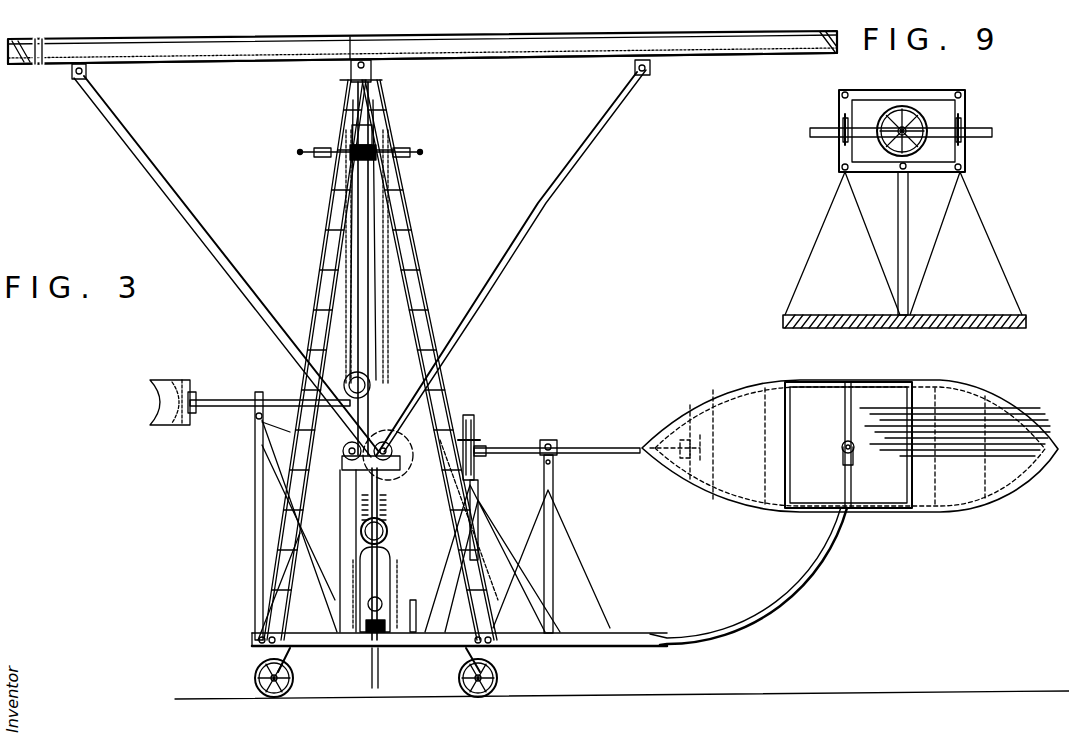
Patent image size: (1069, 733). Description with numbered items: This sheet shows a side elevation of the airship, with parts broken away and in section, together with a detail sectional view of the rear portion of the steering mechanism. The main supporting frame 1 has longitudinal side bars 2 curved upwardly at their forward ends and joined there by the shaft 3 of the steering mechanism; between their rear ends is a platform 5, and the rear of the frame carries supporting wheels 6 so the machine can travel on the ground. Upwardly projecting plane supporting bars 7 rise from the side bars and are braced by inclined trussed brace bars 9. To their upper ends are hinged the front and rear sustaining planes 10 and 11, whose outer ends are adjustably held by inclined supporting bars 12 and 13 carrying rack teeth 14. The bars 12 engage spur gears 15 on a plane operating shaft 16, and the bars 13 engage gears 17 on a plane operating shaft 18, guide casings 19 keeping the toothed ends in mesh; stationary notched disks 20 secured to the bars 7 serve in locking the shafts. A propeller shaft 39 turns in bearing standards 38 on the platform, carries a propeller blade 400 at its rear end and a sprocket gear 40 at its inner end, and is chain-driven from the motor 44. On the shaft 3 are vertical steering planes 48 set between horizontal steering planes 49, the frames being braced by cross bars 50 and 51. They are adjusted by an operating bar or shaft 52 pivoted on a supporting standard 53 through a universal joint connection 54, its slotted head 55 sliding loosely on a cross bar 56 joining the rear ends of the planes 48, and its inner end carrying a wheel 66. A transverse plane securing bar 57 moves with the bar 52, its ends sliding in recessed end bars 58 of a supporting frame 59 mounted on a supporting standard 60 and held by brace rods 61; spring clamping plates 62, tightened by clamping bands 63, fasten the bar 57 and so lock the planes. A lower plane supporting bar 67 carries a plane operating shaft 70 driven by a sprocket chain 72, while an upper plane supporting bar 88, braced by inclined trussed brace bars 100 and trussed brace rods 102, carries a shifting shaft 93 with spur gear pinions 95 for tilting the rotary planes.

In FIG. 3, the main supporting frame 1 is at (250, 638).
In FIG. 3, the side bars 2 is at (660, 638).
In FIG. 3, the shaft of steering mechanism 3 is at (840, 452).
In FIG. 9, the platform 5 is at (940, 318).
In FIG. 3, the supporting wheels 6 is at (277, 692).
In FIG. 3, the plane supporting bars 7 is at (368, 285).
In FIG. 3, the inclined trussed brace bars 9 is at (312, 265).
In FIG. 3, the front sustaining plane 10 is at (705, 58).
In FIG. 3, the rear sustaining plane 11 is at (232, 62).
In FIG. 3, the inclined supporting bars 12 is at (530, 232).
In FIG. 3, the inclined supporting bars 13 is at (200, 218).
In FIG. 3, the rack teeth 14 is at (345, 430).
In FIG. 3, the spur gears 15 is at (395, 468).
In FIG. 3, the plane operating shaft 16 is at (470, 425).
In FIG. 3, the gears 17 is at (350, 460).
In FIG. 3, the plane operating shaft 18 is at (325, 492).
In FIG. 3, the guide casings 19 is at (372, 470).
In FIG. 3, the stationary disks or plates 20 is at (405, 462).
In FIG. 3, the bearing standards 38 is at (257, 505).
In FIG. 3, the propeller shaft 39 is at (220, 400).
In FIG. 3, the sprocket gear 40 is at (375, 385).
In FIG. 3, the motor 44 is at (386, 528).
In FIG. 3, the vertically disposed steering planes 48 is at (985, 410).
In FIG. 3, the horizontally disposed steering planes 49 is at (895, 382).
In FIG. 3, the cross bars 50 is at (745, 440).
In FIG. 3, the cross bars 51 is at (842, 432).
In FIG. 3, the operating bar or shaft 52 is at (605, 452).
In FIG. 9, the operating bar or shaft 52 is at (905, 128).
In FIG. 3, the supporting standard 53 is at (552, 555).
In FIG. 3, the universal joint connection 54 is at (553, 455).
In FIG. 3, the slotted head 55 is at (700, 400).
In FIG. 3, the cross bar 56 is at (672, 482).
In FIG. 3, the plane securing bar 57 is at (476, 453).
In FIG. 3, the recessed end bars 58 is at (478, 435).
In FIG. 3, the supporting frame 59 is at (474, 448).
In FIG. 9, the supporting frame 59 is at (870, 90).
In FIG. 3, the supporting standard 60 is at (478, 520).
In FIG. 9, the supporting standard 60 is at (905, 190).
In FIG. 3, the brace rods 61 is at (486, 570).
In FIG. 9, the brace rods 61 is at (860, 228).
In FIG. 9, the spring clamping plates 62 is at (845, 145).
In FIG. 9, the clamping bands or rings 63 is at (840, 130).
In FIG. 3, the wheel 66 is at (480, 420).
In FIG. 9, the wheel 66 is at (880, 125).
In FIG. 3, the lower plane supporting bar 67 is at (373, 645).
In FIG. 3, the plane operating shaft 70 is at (383, 604).
In FIG. 3, the sprocket chain 72 is at (345, 585).
In FIG. 3, the upper plane supporting bar 88 is at (395, 145).
In FIG. 3, the shifting shaft 93 is at (380, 130).
In FIG. 3, the spur gear pinions 95 is at (340, 315).
In FIG. 3, the inclined trussed brace bars 100 is at (400, 300).
In FIG. 3, the trussed brace rods 102 is at (320, 150).
In FIG. 3, the propeller blade 400 is at (175, 420).